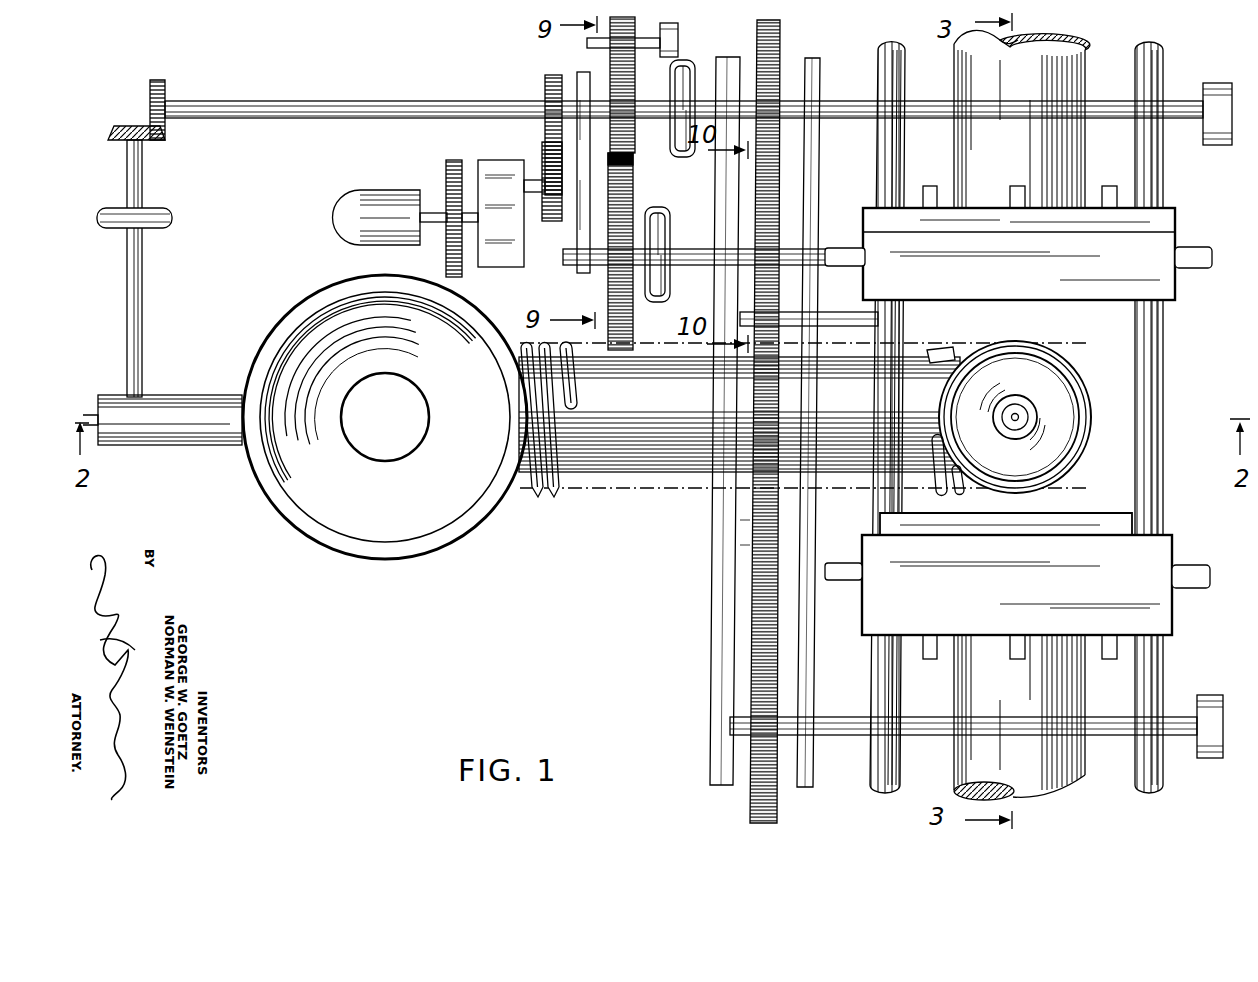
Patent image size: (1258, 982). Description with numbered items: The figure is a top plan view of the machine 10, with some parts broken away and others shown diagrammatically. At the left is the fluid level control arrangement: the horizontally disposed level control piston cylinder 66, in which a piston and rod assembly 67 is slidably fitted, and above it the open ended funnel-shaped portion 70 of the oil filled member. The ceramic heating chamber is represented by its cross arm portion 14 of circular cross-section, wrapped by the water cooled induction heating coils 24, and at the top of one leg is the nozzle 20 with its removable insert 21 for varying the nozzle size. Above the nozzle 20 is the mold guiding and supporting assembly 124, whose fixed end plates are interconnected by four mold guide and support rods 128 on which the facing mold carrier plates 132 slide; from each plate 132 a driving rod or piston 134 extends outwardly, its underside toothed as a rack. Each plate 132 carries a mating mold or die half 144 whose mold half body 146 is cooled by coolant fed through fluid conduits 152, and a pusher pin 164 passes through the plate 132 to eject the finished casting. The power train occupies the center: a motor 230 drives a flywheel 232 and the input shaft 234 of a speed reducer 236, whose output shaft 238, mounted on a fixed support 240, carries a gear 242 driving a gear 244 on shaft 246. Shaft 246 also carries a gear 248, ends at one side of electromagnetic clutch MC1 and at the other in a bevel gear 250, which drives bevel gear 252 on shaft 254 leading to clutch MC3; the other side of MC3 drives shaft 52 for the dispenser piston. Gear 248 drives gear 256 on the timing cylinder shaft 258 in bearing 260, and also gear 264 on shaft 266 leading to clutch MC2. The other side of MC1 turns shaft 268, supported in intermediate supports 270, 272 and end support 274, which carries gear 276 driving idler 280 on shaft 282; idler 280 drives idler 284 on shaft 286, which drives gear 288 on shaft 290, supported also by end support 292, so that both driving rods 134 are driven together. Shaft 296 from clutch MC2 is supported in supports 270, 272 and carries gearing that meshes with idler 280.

The machine 10 is at (606, 524).
The cross arm portion 14 is at (686, 462).
The nozzle 20 is at (1026, 429).
The insert 21 is at (1014, 404).
The coils 24 is at (554, 498).
The shaft 52 is at (130, 299).
The level control piston cylinder 66 is at (210, 395).
The piston and rod assembly 67 is at (90, 410).
The funnel-shaped portion 70 is at (306, 304).
The mold guiding and supporting assembly 124 is at (1190, 243).
The mold guide and support rods 128 is at (878, 146).
The mold carrier plate 132 is at (872, 209).
The driving rod or piston 134 is at (1080, 72).
The mating mold or die half 144 is at (1180, 287).
The mold half body 146 is at (1170, 302).
The fluid conduits 152 is at (1207, 263).
The pusher pin 164 is at (1105, 186).
The motor 230 is at (378, 190).
The flywheel 232 is at (449, 166).
The input shaft 234 is at (470, 212).
The speed reducer 236 is at (500, 160).
The output shaft 238 is at (578, 232).
The fixed support 240 is at (578, 273).
The gear 242 is at (551, 222).
The gear 244 is at (545, 88).
The shaft 246 is at (392, 100).
The gear 248 is at (633, 130).
The bevel gear 250 is at (158, 82).
The bevel gear 252 is at (117, 139).
The shaft 254 is at (140, 184).
The gear 256 is at (634, 52).
The timing cylinder shaft 258 is at (590, 47).
The bearing 260 is at (679, 27).
The gear 264 is at (633, 322).
The shaft 266 is at (598, 270).
The shaft 268 is at (848, 101).
The intermediate support 270 is at (718, 191).
The intermediate support 272 is at (819, 175).
The end support 274 is at (1217, 83).
The gear 276 is at (781, 48).
The idler 280 is at (752, 262).
The shaft 282 is at (790, 312).
The idler 284 is at (752, 550).
The shaft 286 is at (752, 524).
The gear 288 is at (778, 803).
The shaft 290 is at (832, 717).
The end support 292 is at (1210, 758).
The shaft 296 is at (700, 249).
The electromagnetic clutch MC1 is at (690, 66).
The electromagnetic clutch MC2 is at (660, 207).
The electromagnetic clutch MC3 is at (172, 218).